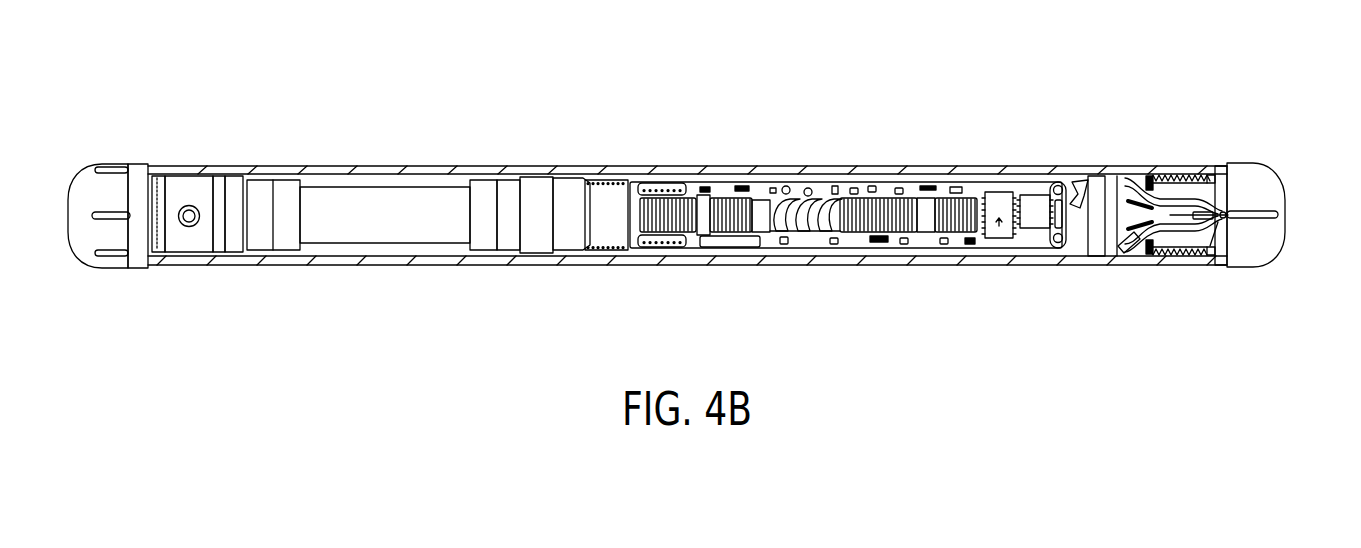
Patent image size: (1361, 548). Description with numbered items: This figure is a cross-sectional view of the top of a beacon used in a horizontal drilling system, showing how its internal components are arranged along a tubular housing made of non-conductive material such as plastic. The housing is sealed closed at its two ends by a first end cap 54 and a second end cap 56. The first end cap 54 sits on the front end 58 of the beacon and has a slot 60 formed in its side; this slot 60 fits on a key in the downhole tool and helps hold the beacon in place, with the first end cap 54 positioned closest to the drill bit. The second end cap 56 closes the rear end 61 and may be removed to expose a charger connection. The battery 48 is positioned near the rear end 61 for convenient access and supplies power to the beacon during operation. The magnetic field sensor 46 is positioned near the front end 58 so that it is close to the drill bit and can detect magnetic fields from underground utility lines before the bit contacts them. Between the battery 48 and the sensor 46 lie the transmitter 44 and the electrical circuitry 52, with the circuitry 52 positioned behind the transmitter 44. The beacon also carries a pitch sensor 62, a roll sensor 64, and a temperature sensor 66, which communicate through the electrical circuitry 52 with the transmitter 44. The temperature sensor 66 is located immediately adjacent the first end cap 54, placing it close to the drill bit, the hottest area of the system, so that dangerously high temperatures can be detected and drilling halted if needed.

The transmitter 44 is at (771, 174).
The magnetic field sensor 46 is at (1105, 176).
The battery 48 is at (385, 181).
The electrical circuitry 52 is at (846, 217).
The first end cap 54 is at (1278, 190).
The second end cap 56 is at (90, 172).
The front end 58 is at (1178, 182).
The slot 60 is at (1278, 257).
The rear end 61 is at (176, 195).
The pitch sensor 62 is at (999, 164).
The roll sensor 64 is at (964, 185).
The temperature sensor 66 is at (1173, 245).